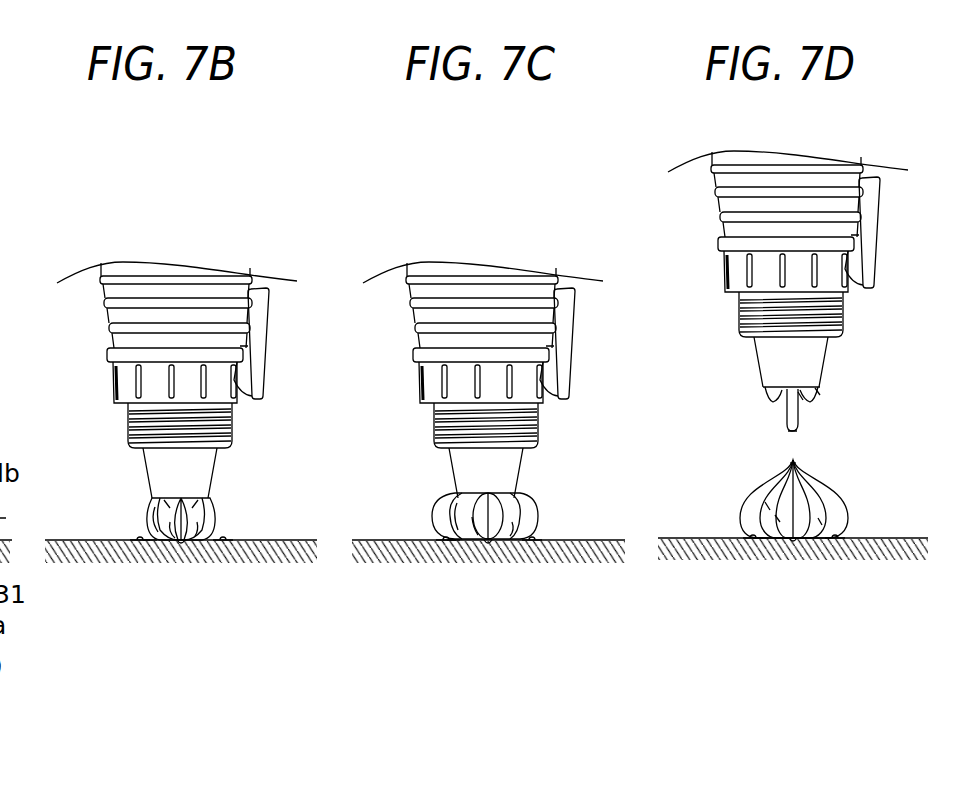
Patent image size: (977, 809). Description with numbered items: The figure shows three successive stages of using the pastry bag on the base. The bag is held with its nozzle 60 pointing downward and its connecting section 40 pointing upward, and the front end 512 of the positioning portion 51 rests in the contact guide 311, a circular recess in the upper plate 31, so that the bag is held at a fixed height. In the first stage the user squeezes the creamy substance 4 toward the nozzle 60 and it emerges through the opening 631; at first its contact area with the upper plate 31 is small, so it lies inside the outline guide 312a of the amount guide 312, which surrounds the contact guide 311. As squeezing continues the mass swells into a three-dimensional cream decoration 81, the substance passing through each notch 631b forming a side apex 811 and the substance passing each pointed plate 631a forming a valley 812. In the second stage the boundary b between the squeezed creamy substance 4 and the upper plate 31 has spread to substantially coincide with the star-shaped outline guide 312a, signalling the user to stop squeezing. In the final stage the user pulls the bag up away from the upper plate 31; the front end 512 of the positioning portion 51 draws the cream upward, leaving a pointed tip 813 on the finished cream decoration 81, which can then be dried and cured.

In FIG. 7B, the connecting section 40 is at (89, 307).
In FIG. 7C, the connecting section 40 is at (457, 332).
In FIG. 7D, the connecting section 40 is at (762, 221).
In FIG. 7B, the nozzle 60 is at (115, 423).
In FIG. 7C, the nozzle 60 is at (436, 450).
In FIG. 7D, the nozzle 60 is at (741, 339).
In FIG. 7B, the cream decoration 81 is at (228, 509).
In FIG. 7C, the cream decoration 81 is at (551, 507).
In FIG. 7D, the cream decoration 81 is at (858, 504).
In FIG. 7B, the side apex 811 is at (155, 507).
In FIG. 7C, the side apex 811 is at (457, 503).
In FIG. 7D, the side apex 811 is at (765, 502).
In FIG. 7B, the valley 812 is at (170, 522).
In FIG. 7C, the valley 812 is at (472, 517).
In FIG. 7D, the valley 812 is at (775, 515).
In FIG. 7D, the pointed tip 813 is at (792, 458).
In FIG. 7B, the creamy substance 4 is at (197, 522).
In FIG. 7C, the creamy substance 4 is at (512, 522).
In FIG. 7D, the creamy substance 4 is at (818, 518).
In FIG. 7B, the upper plate 31 is at (272, 545).
In FIG. 7C, the upper plate 31 is at (587, 543).
In FIG. 7D, the upper plate 31 is at (877, 542).
In FIG. 7B, the contact guide 311 is at (182, 543).
In FIG. 7C, the contact guide 311 is at (487, 542).
In FIG. 7D, the contact guide 311 is at (793, 542).
In FIG. 7B, the amount guide 312 is at (183, 610).
In FIG. 7C, the amount guide 312 is at (490, 607).
In FIG. 7D, the amount guide 312 is at (780, 604).
In FIG. 7B, the outline guide 312a is at (227, 543).
In FIG. 7C, the outline guide 312a is at (533, 542).
In FIG. 7D, the outline guide 312a is at (837, 542).
In FIG. 7B, the front end 512 is at (187, 517).
In FIG. 7C, the front end 512 is at (488, 542).
In FIG. 7D, the front end 512 is at (790, 430).
In FIG. 7D, the positioning portion 51 is at (788, 418).
In FIG. 7D, the opening 631 is at (828, 407).
In FIG. 7B, the pointed plate 631a is at (182, 545).
In FIG. 7D, the pointed plate 631a is at (800, 402).
In FIG. 7D, the notch 631b is at (822, 387).
In FIG. 7B, the boundary b is at (157, 542).
In FIG. 7C, the boundary b is at (445, 540).
In FIG. 7D, the boundary b is at (753, 542).